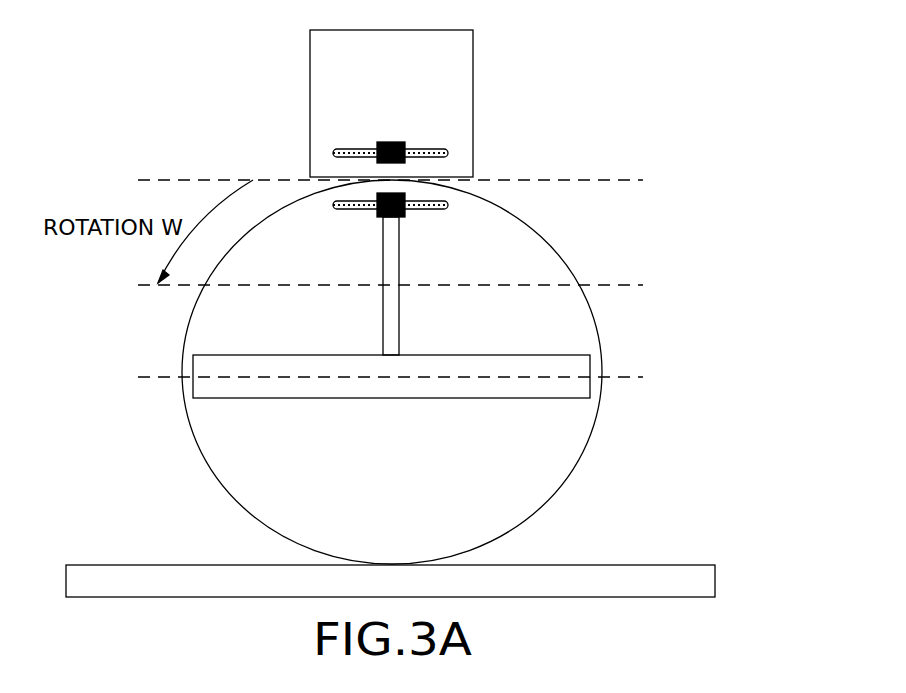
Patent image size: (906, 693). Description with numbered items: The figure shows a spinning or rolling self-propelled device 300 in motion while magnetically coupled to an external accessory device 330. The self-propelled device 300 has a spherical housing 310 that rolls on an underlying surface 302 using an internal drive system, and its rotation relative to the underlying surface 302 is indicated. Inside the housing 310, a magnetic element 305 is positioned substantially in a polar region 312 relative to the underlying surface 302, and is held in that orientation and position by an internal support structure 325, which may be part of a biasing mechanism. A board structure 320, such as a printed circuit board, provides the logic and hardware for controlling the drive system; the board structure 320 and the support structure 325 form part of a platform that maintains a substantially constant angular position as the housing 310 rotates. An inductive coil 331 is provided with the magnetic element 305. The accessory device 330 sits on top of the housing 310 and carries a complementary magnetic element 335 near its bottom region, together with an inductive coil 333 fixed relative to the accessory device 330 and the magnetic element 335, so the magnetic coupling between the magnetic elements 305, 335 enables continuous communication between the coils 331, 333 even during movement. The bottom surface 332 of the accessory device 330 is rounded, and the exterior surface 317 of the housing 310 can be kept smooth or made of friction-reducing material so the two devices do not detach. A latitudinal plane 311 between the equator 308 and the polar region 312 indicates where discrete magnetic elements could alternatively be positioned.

The self-propelled device 300 is at (502, 372).
The underlying surface 302 is at (698, 594).
The magnetic element 305 is at (377, 213).
The equator 308 is at (615, 375).
The housing 310 is at (590, 447).
The latitudinal plane 311 is at (625, 282).
The polar region 312 is at (415, 166).
The exterior surface 317 is at (533, 227).
The board structure 320 is at (227, 365).
The support structure 325 is at (383, 297).
The accessory device 330 is at (356, 64).
The inductive coil 331 is at (437, 210).
The bottom surface 332 is at (390, 180).
The inductive coil 333 is at (428, 150).
The complementary magnetic element 335 is at (392, 142).